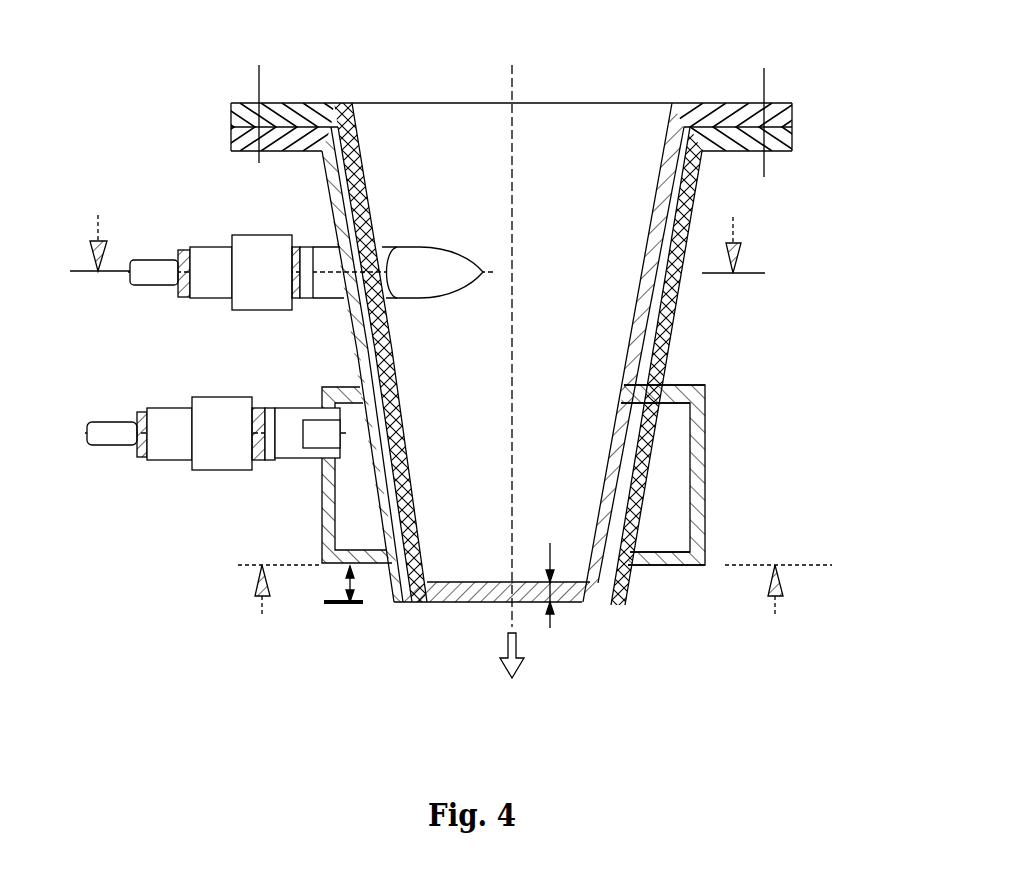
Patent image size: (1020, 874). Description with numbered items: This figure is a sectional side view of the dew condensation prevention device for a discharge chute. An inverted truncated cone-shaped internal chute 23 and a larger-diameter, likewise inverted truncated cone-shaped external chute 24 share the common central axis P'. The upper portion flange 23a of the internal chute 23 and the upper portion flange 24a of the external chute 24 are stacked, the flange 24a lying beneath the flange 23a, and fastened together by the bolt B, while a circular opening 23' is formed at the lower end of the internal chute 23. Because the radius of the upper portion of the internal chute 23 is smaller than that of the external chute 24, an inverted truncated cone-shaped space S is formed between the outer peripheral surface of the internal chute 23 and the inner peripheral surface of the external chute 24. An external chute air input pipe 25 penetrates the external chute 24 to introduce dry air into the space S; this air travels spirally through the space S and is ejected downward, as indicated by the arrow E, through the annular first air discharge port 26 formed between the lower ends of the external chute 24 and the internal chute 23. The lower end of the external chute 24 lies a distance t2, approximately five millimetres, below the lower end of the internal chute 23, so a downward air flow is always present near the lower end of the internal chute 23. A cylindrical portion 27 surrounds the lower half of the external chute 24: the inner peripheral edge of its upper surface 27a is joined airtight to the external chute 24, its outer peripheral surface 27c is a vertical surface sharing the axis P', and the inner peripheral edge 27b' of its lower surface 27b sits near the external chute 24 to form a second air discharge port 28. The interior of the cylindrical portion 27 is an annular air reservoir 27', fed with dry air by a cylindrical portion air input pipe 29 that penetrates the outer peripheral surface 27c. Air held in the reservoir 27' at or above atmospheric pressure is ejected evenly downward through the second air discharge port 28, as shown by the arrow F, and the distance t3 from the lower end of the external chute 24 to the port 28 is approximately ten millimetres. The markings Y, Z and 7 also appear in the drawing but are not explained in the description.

The internal chute 23 is at (503, 352).
The upper portion flange 23a is at (795, 121).
The circular opening 23' is at (492, 629).
The external chute 24 is at (679, 306).
The upper portion flange 24a is at (796, 148).
The external chute air input pipe 25 is at (257, 298).
The first air discharge port 26 is at (590, 603).
The cylindrical portion 27 is at (706, 475).
The upper surface 27a is at (704, 391).
The lower surface 27b is at (683, 605).
The inner peripheral edge 27b' is at (718, 523).
The outer peripheral surface 27c is at (321, 500).
The air reservoir 27' is at (516, 496).
The second air discharge port 28 is at (384, 583).
The cylindrical portion air input pipe 29 is at (214, 468).
The space S is at (664, 352).
The arrow E is at (413, 607).
The arrow F is at (392, 605).
The bolt B is at (257, 162).
The section line Y is at (408, 244).
The section line Z is at (519, 590).
The region 7 is at (823, 328).
The central axis P' is at (539, 363).
The distance t2 is at (569, 574).
The distance t3 is at (347, 579).